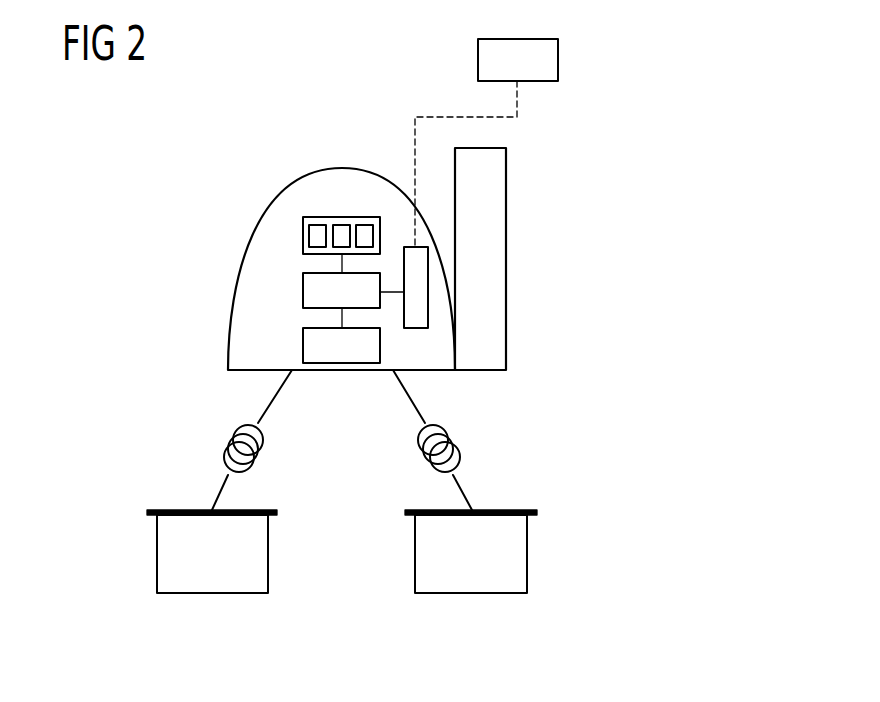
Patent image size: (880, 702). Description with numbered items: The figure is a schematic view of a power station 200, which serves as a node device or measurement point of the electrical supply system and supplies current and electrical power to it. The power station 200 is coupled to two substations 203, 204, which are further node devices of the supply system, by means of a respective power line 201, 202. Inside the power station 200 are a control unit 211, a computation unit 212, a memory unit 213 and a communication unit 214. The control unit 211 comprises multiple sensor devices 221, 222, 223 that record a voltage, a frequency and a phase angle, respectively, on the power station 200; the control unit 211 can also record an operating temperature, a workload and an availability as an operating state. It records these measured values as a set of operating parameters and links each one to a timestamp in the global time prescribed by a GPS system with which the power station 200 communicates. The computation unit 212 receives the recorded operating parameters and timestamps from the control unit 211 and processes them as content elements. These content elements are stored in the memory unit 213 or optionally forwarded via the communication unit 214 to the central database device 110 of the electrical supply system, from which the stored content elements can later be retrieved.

The database device 110 is at (560, 61).
The power station 200 is at (190, 151).
The power line 201 is at (270, 405).
The power line 202 is at (413, 405).
The substation 203 is at (157, 557).
The substation 204 is at (527, 557).
The control unit 211 is at (303, 236).
The computation unit 212 is at (303, 291).
The memory unit 213 is at (303, 348).
The communication unit 214 is at (430, 287).
The sensor device 221 is at (318, 225).
The sensor device 222 is at (342, 225).
The sensor device 223 is at (365, 225).